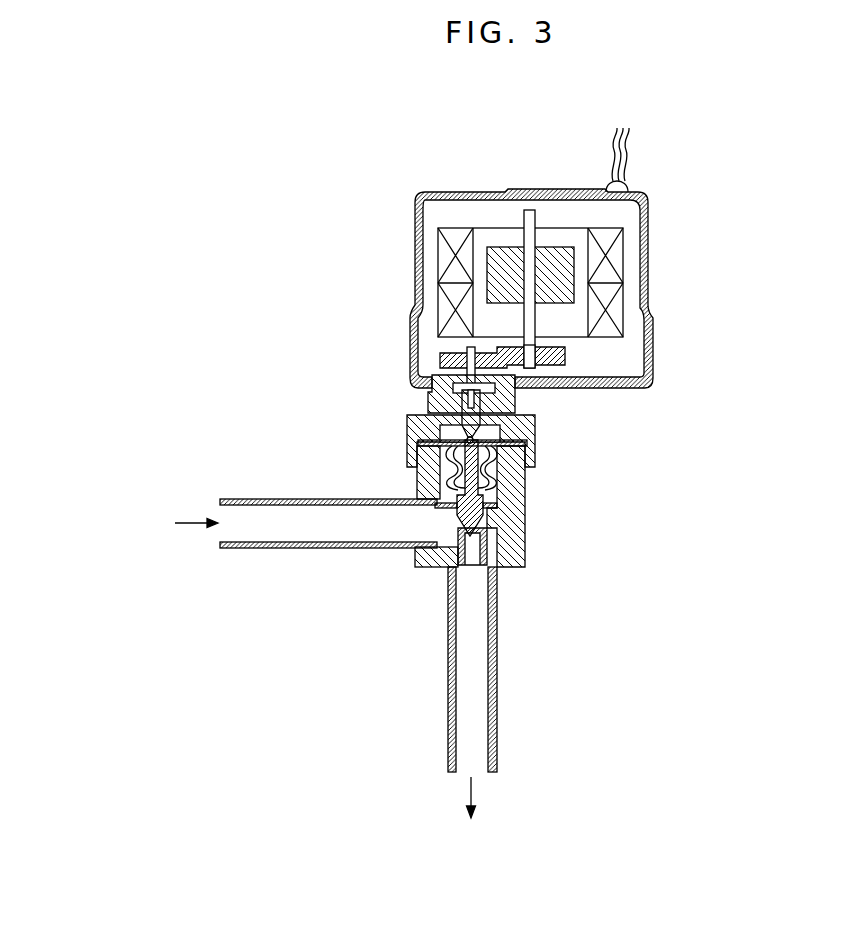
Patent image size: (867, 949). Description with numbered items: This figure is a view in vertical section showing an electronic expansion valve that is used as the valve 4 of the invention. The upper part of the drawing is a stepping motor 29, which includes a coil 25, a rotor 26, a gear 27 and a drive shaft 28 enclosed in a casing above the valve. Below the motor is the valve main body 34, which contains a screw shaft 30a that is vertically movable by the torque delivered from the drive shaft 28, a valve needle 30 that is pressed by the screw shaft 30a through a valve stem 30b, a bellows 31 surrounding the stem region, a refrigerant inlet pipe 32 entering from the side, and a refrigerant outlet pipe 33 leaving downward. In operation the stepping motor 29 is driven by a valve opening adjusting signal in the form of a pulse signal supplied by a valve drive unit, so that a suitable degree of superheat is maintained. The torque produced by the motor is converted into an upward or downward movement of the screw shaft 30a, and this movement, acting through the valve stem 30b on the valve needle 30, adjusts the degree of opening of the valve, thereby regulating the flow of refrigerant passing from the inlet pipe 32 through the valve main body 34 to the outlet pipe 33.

The valve 4 is at (422, 183).
The coil 25 is at (617, 312).
The rotor 26 is at (562, 247).
The gear 27 is at (463, 353).
The drive shaft 28 is at (432, 390).
The stepping motor 29 is at (417, 253).
The valve needle 30 is at (480, 526).
The screw shaft 30a is at (484, 401).
The valve stem 30b is at (483, 458).
The bellows 31 is at (455, 488).
The refrigerant inlet pipe 32 is at (340, 550).
The refrigerant outlet pipe 33 is at (497, 680).
The valve main body 34 is at (525, 498).